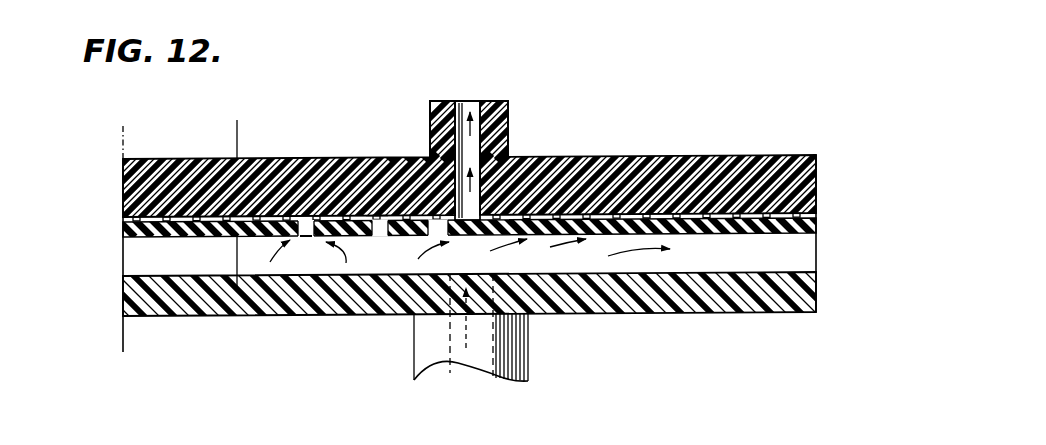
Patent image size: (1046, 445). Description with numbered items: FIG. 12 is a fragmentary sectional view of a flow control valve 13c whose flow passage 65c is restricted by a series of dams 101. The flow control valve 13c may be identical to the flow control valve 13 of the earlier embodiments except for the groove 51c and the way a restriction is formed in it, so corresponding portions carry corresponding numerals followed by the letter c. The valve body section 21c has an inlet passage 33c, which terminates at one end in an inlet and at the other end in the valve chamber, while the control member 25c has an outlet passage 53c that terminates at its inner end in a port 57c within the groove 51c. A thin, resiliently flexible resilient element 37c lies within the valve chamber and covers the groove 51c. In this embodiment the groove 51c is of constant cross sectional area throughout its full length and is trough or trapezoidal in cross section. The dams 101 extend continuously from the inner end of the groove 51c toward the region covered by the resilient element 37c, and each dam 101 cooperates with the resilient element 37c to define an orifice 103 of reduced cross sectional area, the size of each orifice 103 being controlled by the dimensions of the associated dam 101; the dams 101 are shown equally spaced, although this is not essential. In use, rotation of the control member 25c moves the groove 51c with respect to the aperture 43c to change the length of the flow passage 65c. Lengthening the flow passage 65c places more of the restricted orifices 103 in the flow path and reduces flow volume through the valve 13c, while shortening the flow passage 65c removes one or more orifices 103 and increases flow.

The flow control valve 13c is at (111, 134).
The flow control valve 13 is at (226, 114).
The control member 25c is at (689, 147).
The outlet passage 53c is at (461, 92).
The port 57c is at (467, 202).
The flow passage 65c is at (361, 208).
The dams 101 is at (160, 211).
The groove 51c is at (244, 213).
The orifice 103 is at (298, 230).
The resilient element 37c is at (809, 226).
The valve body section 21c is at (775, 289).
The aperture 43c is at (297, 230).
The inlet passage 33c is at (470, 372).